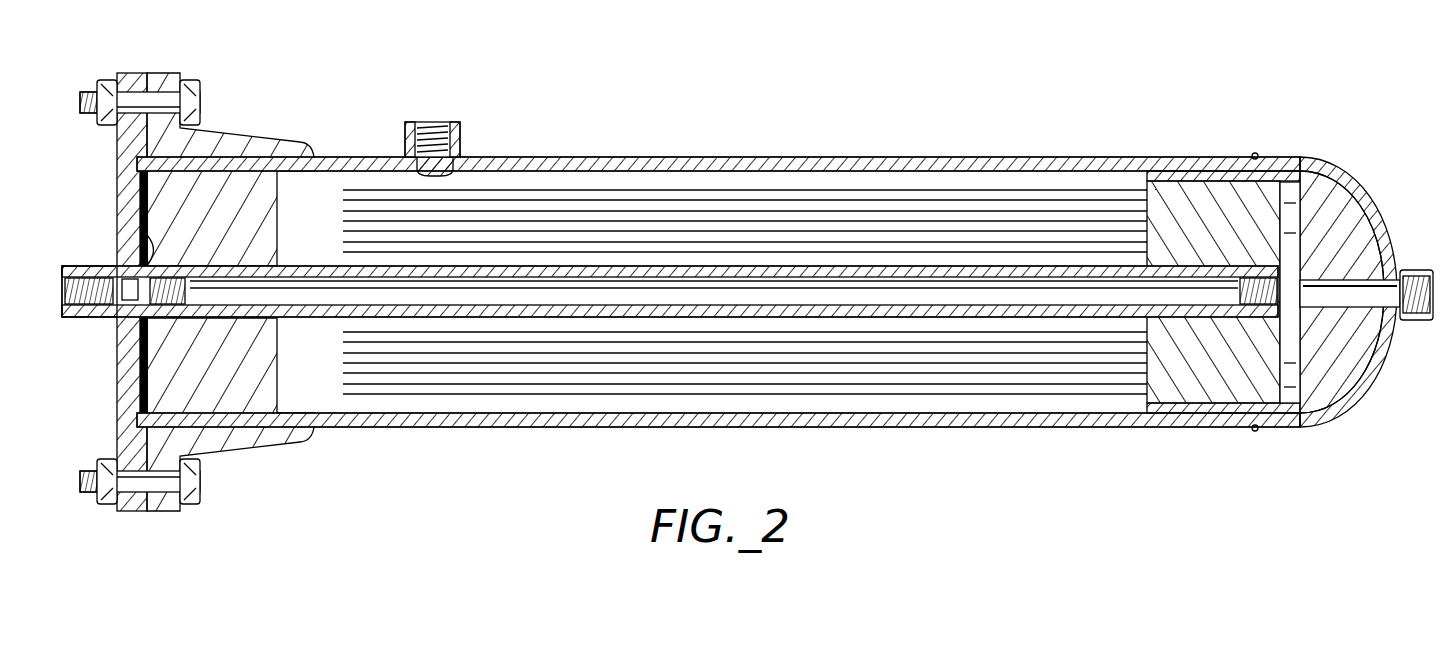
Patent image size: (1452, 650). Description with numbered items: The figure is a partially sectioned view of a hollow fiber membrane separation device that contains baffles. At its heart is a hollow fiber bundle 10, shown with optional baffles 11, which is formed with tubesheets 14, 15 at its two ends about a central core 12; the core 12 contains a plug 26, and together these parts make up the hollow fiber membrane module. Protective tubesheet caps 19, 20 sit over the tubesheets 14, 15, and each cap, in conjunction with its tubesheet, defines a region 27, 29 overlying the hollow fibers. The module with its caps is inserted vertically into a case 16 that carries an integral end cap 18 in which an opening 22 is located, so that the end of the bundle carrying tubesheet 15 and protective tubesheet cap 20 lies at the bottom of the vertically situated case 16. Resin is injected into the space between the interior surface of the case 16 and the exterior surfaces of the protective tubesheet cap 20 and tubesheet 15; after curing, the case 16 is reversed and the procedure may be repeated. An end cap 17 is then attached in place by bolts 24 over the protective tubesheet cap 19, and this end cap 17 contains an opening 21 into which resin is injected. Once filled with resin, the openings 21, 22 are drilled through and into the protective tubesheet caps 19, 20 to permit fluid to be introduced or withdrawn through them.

The hollow fiber bundle 10 is at (1013, 220).
The baffles 11 is at (810, 250).
The core 12 is at (630, 270).
The tubesheet 14 is at (232, 187).
The tubesheet 15 is at (1260, 210).
The case 16 is at (916, 157).
The end cap 17 is at (117, 403).
The integral end cap 18 is at (1357, 380).
The protective tubesheet cap 19 is at (140, 203).
The protective tubesheet cap 20 is at (1292, 250).
The opening 21 is at (93, 318).
The opening 22 is at (1400, 273).
The bolts 24 is at (190, 80).
The plug 26 is at (116, 377).
The region 27 is at (145, 250).
The region 29 is at (1352, 216).